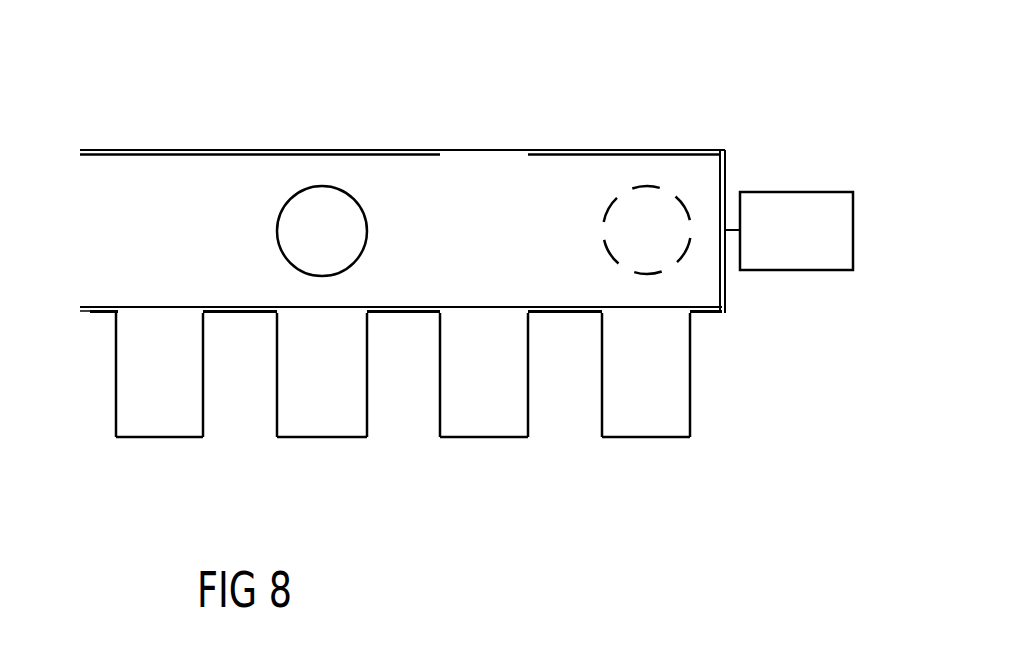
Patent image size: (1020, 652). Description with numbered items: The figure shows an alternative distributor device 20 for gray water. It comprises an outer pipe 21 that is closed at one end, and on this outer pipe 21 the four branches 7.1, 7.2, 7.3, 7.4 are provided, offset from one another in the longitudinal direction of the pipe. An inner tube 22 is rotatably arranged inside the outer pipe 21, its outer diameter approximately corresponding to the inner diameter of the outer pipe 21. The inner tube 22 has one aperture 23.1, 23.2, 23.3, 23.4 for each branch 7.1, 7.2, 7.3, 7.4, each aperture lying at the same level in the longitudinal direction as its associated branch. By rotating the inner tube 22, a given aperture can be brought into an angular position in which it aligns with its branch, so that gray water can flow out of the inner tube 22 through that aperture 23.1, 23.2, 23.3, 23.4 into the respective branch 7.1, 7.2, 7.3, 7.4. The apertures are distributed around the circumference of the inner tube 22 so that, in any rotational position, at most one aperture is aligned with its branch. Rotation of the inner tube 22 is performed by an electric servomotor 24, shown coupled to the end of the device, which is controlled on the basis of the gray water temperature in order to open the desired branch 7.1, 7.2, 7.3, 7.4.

The distributor device 20 is at (170, 110).
The outer pipe 21 is at (93, 316).
The inner tube 22 is at (240, 307).
The aperture 23.1 is at (648, 185).
The aperture 23.2 is at (463, 155).
The aperture 23.3 is at (322, 185).
The aperture 23.4 is at (158, 313).
The electric servomotor 24 is at (803, 250).
The branch 7.1 is at (690, 437).
The branch 7.2 is at (528, 437).
The branch 7.3 is at (367, 437).
The branch 7.4 is at (204, 437).